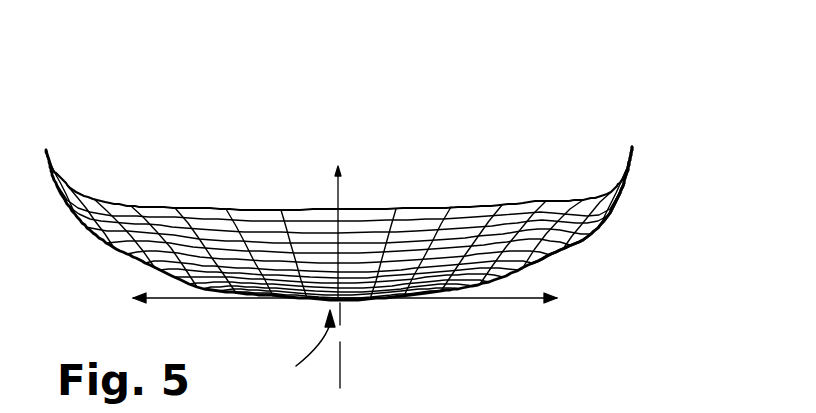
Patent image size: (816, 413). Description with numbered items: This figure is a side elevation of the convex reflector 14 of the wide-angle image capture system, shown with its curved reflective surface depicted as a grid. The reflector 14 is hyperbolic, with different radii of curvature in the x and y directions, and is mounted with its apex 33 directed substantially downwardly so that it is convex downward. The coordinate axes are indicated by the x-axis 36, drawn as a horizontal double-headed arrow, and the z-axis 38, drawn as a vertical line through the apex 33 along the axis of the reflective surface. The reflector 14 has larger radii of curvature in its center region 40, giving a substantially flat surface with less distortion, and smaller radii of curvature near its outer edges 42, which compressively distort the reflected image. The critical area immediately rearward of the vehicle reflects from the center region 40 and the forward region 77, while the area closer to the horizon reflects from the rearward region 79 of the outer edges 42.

The convex reflector 14 is at (542, 370).
The apex 33 is at (341, 302).
The x-axis 36 is at (527, 300).
The z-axis 38 is at (342, 367).
The center region 40 is at (295, 348).
The outer edges 42 is at (619, 203).
The forward region 77 is at (143, 262).
The rearward region 79 is at (623, 187).